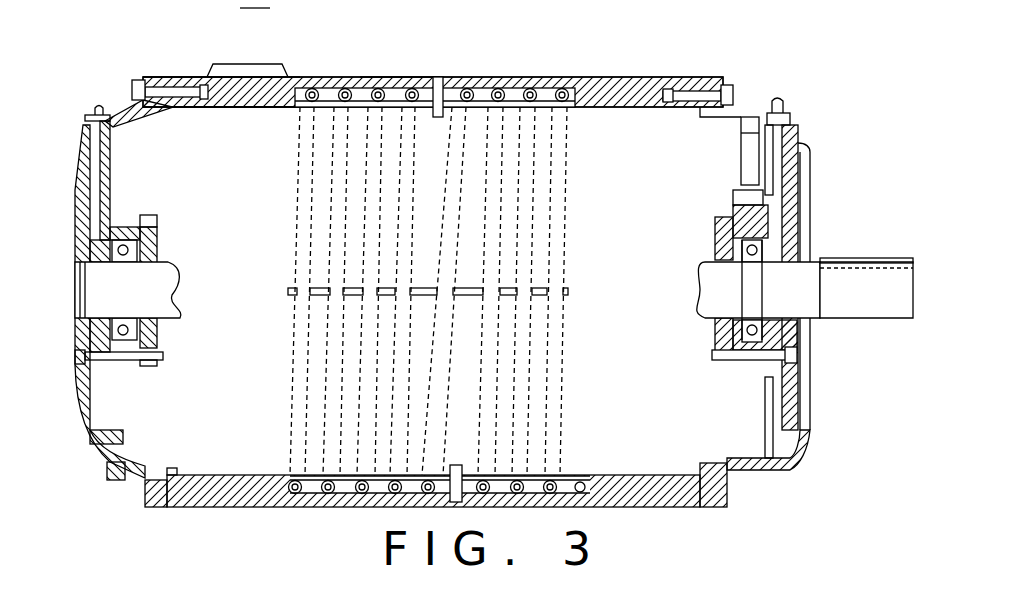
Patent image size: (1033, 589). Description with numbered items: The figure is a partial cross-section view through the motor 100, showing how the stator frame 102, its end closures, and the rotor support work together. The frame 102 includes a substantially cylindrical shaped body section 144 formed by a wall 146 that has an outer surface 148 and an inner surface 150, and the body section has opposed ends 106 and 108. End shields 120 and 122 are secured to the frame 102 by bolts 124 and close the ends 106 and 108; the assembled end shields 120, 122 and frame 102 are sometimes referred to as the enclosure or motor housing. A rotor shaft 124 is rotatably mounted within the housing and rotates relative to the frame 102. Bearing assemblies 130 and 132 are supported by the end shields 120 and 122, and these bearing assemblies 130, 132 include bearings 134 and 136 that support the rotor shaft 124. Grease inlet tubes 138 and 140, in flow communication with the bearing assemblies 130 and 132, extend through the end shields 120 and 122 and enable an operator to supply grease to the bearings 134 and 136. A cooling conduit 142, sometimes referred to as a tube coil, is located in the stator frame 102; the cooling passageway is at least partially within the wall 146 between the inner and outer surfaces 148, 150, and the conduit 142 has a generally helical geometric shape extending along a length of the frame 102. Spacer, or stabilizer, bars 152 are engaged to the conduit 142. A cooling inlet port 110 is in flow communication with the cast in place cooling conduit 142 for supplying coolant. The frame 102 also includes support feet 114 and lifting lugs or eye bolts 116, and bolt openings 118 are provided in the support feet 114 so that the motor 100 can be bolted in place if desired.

The motor 100 is at (790, 46).
The stator frame 102 is at (572, 71).
The end of frame 106 is at (727, 84).
The end of frame 108 is at (147, 78).
The cooling inlet port 110 is at (488, 4).
The support feet 114 is at (351, 4).
The lifting lugs or eye bolts 116 is at (234, 66).
The bolt openings 118 is at (392, 7).
The end shield 120 is at (798, 127).
The end shield 122 is at (80, 164).
The rotor shaft 124 is at (133, 90).
The bearing assembly 130 is at (699, 346).
The bearing assembly 132 is at (163, 362).
The bearing 134 is at (763, 242).
The bearing 136 is at (128, 258).
The grease inlet tube 138 is at (770, 172).
The grease inlet tube 140 is at (96, 200).
The cooling conduit 142 is at (567, 215).
The body section 144 is at (280, 88).
The wall 146 is at (618, 99).
The outer surface 148 is at (400, 76).
The inner surface 150 is at (280, 108).
The spacer bars 152 is at (330, 101).